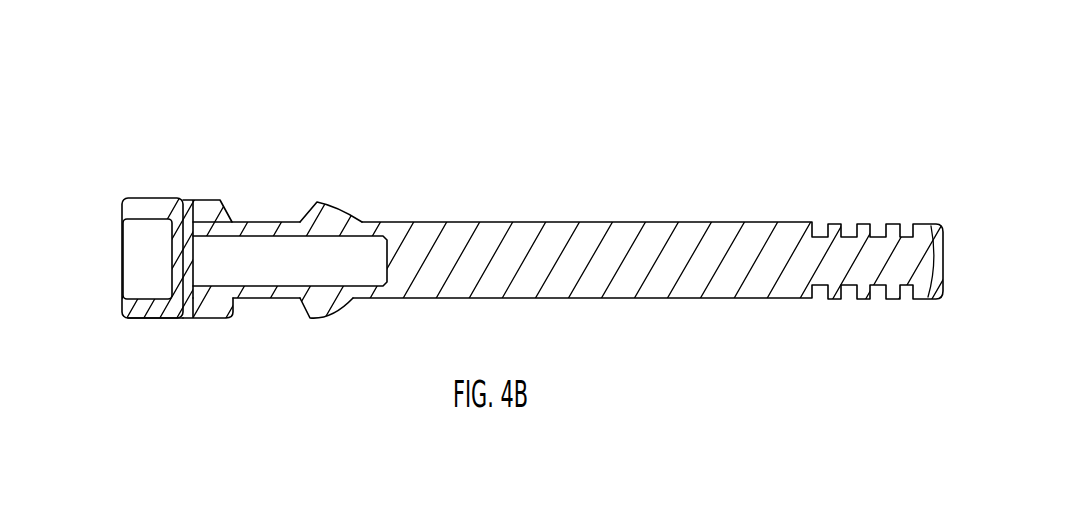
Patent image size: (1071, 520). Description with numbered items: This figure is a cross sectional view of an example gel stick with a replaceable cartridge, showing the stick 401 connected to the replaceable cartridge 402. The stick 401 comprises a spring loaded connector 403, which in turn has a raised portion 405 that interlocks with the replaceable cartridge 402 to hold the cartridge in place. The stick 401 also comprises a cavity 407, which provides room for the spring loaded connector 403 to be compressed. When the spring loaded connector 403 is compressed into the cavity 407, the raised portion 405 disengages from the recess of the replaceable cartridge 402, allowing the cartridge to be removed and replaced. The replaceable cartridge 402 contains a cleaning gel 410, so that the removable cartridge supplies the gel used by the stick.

The stick 401 is at (568, 210).
The replaceable cartridge 402 is at (138, 331).
The spring loaded connector 403 is at (320, 190).
The raised portion 405 is at (221, 188).
The cavity 407 is at (273, 276).
The cleaning gel 410 is at (129, 188).